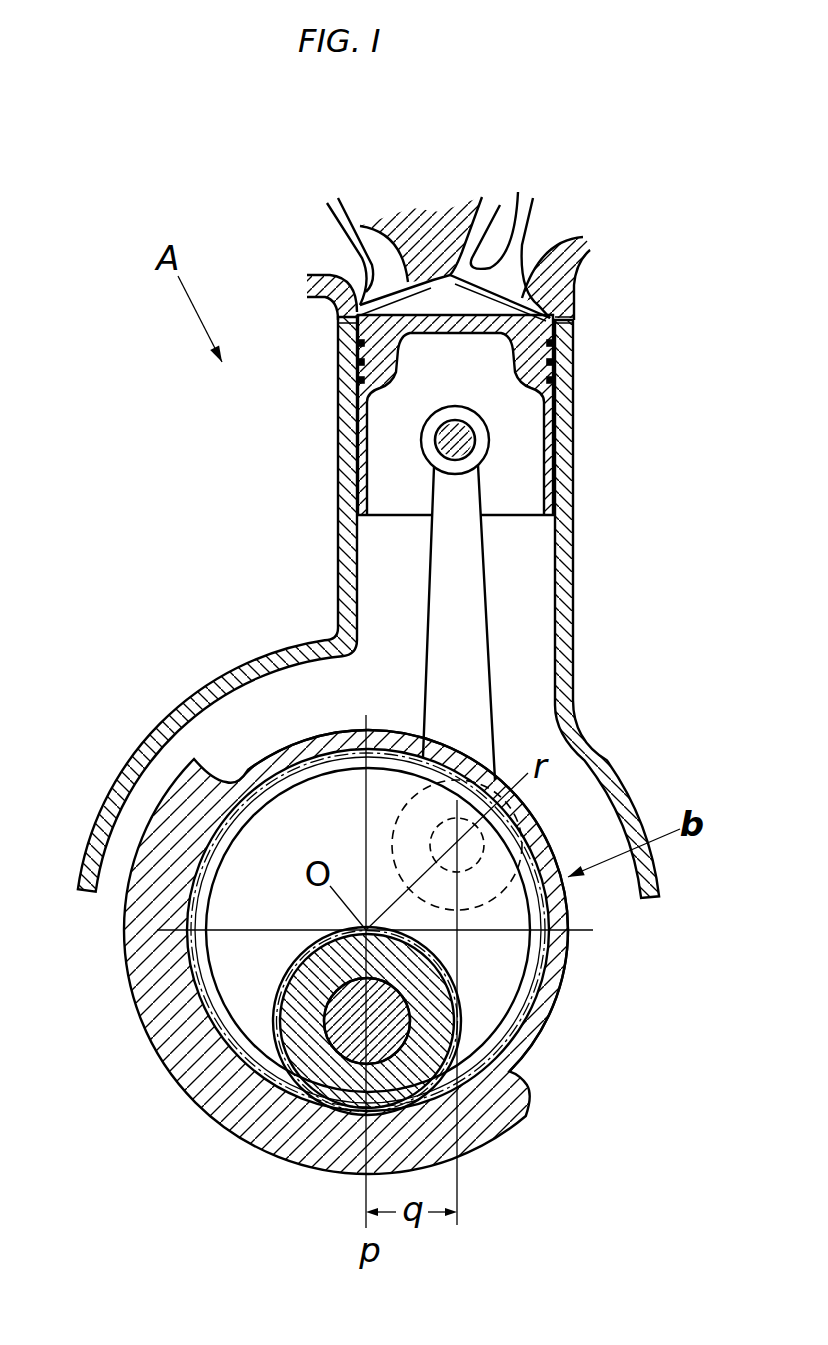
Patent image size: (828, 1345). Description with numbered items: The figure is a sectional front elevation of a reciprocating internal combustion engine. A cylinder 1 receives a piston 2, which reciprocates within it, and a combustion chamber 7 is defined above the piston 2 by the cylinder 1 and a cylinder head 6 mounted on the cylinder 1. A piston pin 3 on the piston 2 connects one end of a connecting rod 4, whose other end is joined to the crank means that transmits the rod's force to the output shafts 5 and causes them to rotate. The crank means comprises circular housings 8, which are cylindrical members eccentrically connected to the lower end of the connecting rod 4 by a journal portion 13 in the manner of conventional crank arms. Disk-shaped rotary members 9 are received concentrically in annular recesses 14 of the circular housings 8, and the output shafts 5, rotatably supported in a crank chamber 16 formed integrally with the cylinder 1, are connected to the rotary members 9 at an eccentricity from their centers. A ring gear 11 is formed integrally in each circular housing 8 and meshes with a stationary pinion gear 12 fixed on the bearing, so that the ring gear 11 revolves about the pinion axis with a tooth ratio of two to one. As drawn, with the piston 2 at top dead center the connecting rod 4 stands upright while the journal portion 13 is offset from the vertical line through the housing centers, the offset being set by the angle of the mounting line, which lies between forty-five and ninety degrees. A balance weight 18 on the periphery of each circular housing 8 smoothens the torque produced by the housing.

The cylinder 1 is at (262, 655).
The piston 2 is at (549, 374).
The piston pin 3 is at (457, 442).
The connecting rod 4 is at (476, 647).
The output shafts 5 is at (398, 1043).
The cylinder head 6 is at (573, 293).
The combustion chamber 7 is at (430, 297).
The circular housings 8 is at (292, 747).
The rotary members 9 is at (227, 894).
The ring gears 11 is at (206, 1002).
The pinion gears 12 is at (258, 1098).
The journal portion 13 is at (460, 846).
The annular recesses 14 is at (184, 956).
The crank chamber 16 is at (222, 722).
The balance weight 18 is at (185, 1075).